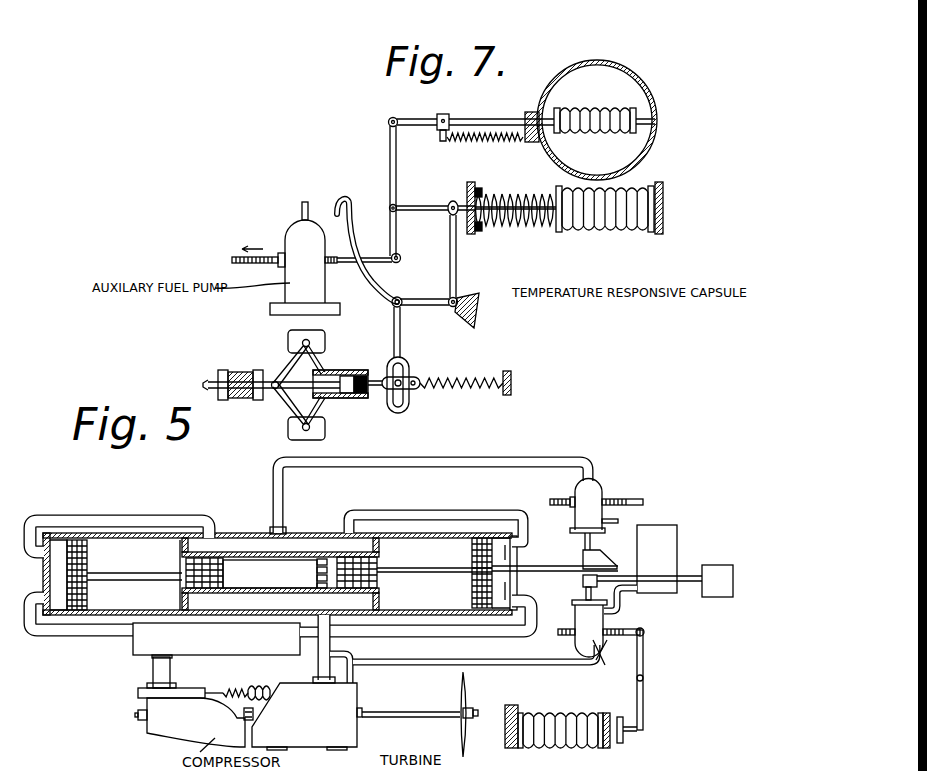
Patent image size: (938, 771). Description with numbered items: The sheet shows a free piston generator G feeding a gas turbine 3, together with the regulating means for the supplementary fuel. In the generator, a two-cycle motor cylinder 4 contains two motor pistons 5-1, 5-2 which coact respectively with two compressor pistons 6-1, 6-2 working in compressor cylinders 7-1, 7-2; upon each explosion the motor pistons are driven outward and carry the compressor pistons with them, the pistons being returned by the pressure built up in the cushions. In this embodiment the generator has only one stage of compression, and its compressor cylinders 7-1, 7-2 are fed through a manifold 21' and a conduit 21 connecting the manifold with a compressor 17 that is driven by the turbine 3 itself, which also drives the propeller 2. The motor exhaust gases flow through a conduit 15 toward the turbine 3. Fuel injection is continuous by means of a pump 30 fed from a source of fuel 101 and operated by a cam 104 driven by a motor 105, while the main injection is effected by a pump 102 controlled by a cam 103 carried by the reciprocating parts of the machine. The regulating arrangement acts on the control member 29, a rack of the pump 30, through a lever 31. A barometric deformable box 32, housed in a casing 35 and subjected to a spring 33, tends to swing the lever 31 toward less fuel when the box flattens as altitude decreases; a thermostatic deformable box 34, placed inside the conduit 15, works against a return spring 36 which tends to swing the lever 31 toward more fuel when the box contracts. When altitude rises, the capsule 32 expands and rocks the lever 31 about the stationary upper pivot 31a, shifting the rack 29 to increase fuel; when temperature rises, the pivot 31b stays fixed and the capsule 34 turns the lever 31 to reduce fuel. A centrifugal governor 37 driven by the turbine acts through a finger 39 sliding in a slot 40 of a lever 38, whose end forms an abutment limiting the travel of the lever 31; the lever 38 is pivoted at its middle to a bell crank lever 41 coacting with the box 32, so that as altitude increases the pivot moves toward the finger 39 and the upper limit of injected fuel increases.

In FIG. 5, the propeller 2 is at (468, 689).
In FIG. 5, the gas turbine 3 is at (337, 722).
In FIG. 5, the two-cycle motor cylinder 4 is at (297, 567).
In FIG. 5, the motor piston 5-1 is at (203, 558).
In FIG. 5, the motor piston 5-2 is at (362, 567).
In FIG. 5, the compressor piston 6-1 is at (80, 545).
In FIG. 5, the compressor piston 6-2 is at (483, 550).
In FIG. 5, the compressor cylinder 7-1 is at (58, 568).
In FIG. 5, the compressor cylinder 7-2 is at (520, 540).
In FIG. 5, the conduit 15 is at (327, 620).
In FIG. 5, the compressor 17 is at (206, 692).
In FIG. 5, the conduit 21 is at (159, 677).
In FIG. 5, the manifold 21' is at (222, 700).
In FIG. 5, the free piston generator G is at (113, 618).
In FIG. 7, the control member 29 is at (338, 200).
In FIG. 7, the pump 30 is at (298, 243).
In FIG. 5, the pump 30 is at (596, 656).
In FIG. 7, the lever 31 is at (390, 163).
In FIG. 7, the upper pivot 31a is at (396, 121).
In FIG. 7, the pivot 31b is at (396, 207).
In FIG. 7, the barometric deformable box 32 is at (600, 232).
In FIG. 5, the barometric deformable box 32 is at (570, 714).
In FIG. 7, the spring 33 is at (528, 232).
In FIG. 7, the thermostatic deformable box 34 is at (604, 110).
In FIG. 7, the capsule casing 35 is at (580, 60).
In FIG. 7, the return spring 36 is at (496, 140).
In FIG. 7, the centrifugal governor 37 is at (325, 408).
In FIG. 7, the lever 38 is at (373, 284).
In FIG. 7, the finger 39 is at (408, 383).
In FIG. 7, the slot 40 is at (401, 366).
In FIG. 7, the bell crank lever 41 is at (420, 299).
In FIG. 5, the source of fuel 101 is at (660, 560).
In FIG. 5, the pump 102 is at (593, 492).
In FIG. 5, the cam 103 is at (583, 559).
In FIG. 5, the cam 104 is at (583, 581).
In FIG. 5, the motor 105 is at (760, 604).